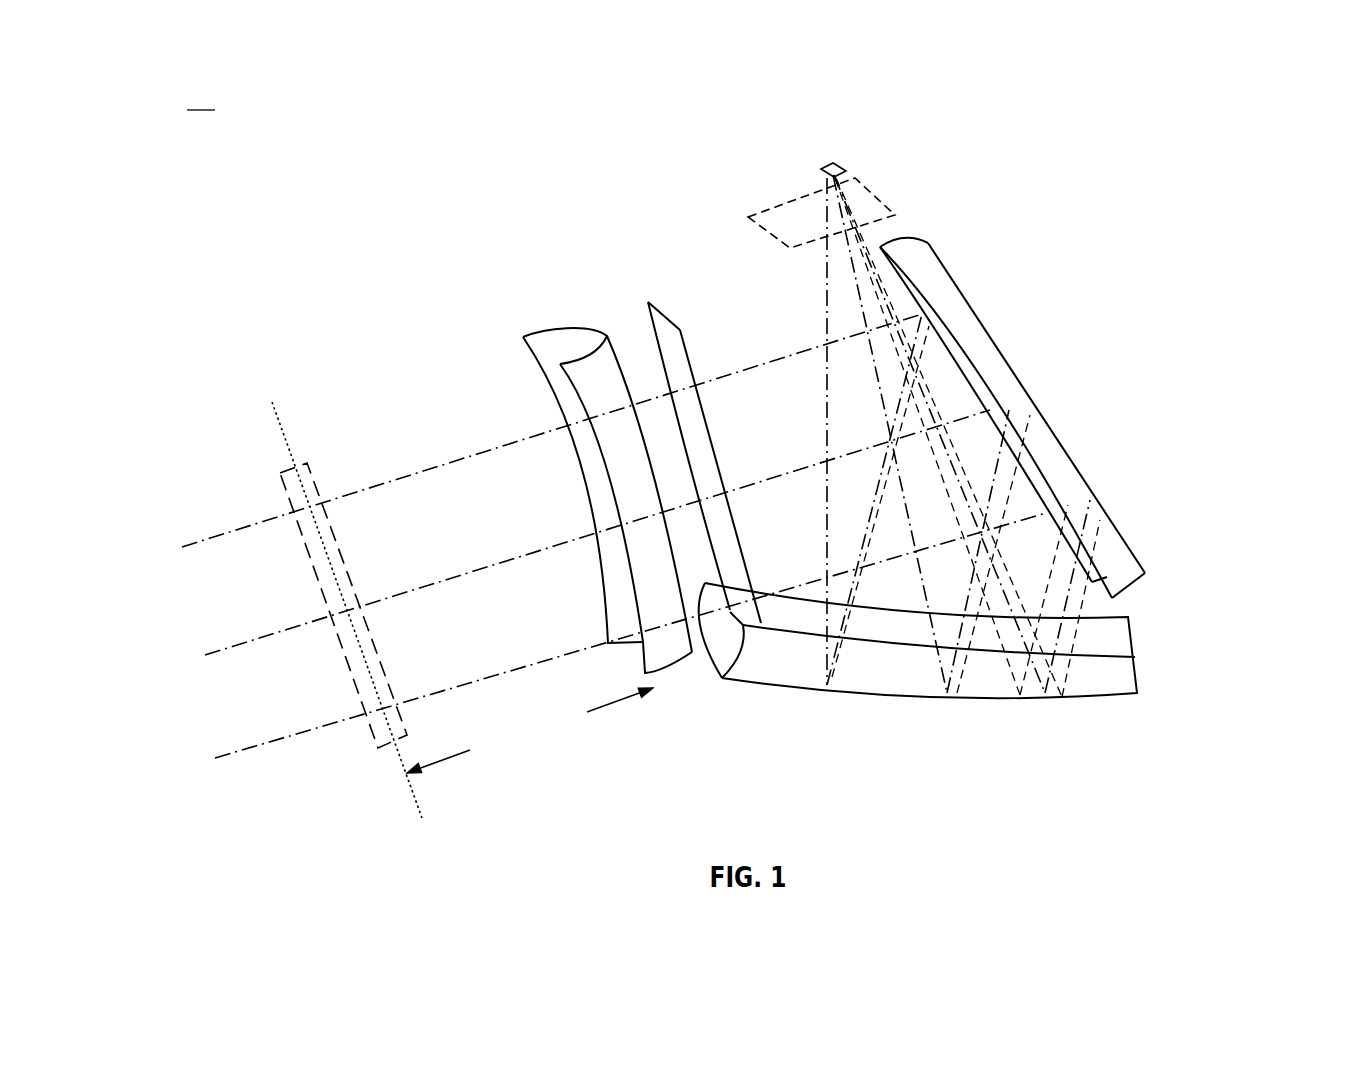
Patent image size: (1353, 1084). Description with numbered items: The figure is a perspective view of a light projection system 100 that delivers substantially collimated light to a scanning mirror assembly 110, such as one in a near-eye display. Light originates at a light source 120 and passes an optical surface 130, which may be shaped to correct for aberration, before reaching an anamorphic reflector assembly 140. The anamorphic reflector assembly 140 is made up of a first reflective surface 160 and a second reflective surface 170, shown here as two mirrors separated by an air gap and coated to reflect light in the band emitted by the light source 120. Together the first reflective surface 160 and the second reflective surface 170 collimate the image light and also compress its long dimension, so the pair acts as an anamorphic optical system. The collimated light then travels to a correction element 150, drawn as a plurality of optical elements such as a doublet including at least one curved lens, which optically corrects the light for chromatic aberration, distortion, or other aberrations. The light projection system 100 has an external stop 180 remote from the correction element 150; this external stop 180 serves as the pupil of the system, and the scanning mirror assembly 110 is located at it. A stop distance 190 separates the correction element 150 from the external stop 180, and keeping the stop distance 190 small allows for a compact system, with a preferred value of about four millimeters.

The light projection system 100 is at (201, 101).
The scanning mirror assembly 110 is at (320, 478).
The light source 120 is at (822, 170).
The optical surface 130 is at (867, 200).
The anamorphic reflector assembly 140 is at (994, 516).
The correction element 150 is at (510, 350).
The first reflective surface 160 is at (920, 664).
The second reflective surface 170 is at (1030, 418).
The external stop 180 is at (420, 802).
The stop distance 190 is at (530, 730).